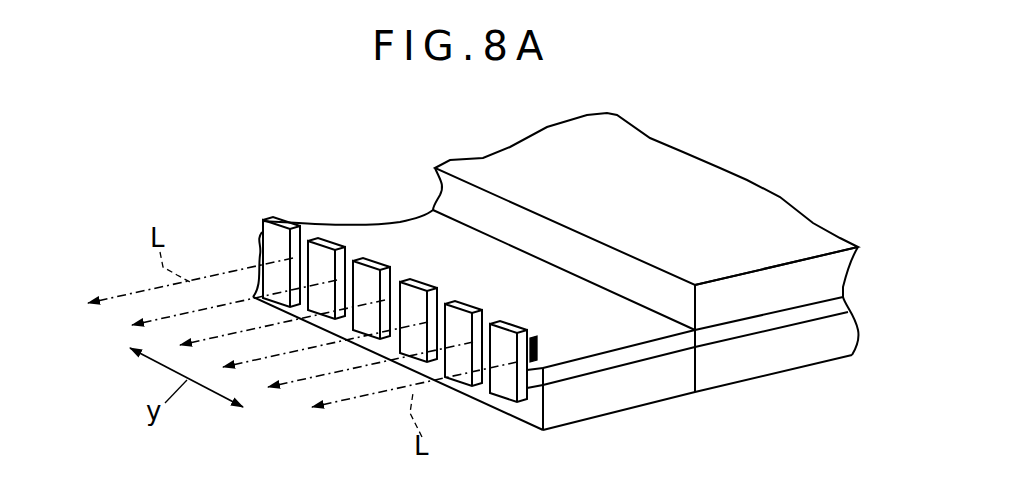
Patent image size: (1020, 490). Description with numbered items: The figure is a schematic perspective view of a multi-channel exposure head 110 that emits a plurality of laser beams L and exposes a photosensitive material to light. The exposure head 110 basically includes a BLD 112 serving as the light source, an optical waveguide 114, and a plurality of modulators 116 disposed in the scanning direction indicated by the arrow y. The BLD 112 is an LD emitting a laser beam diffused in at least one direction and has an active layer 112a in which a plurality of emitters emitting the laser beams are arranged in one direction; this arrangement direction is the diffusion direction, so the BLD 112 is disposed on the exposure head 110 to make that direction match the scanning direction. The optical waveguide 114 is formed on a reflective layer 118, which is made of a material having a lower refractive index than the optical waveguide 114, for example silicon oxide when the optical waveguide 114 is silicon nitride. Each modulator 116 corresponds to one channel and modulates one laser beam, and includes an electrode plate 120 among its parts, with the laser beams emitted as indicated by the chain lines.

The exposure head 110 is at (698, 118).
The BLD 112 is at (773, 210).
The active layer 112a is at (765, 323).
The optical waveguide 114 is at (600, 367).
The modulators 116 is at (347, 238).
The reflective layer 118 is at (660, 393).
The electrode plate 120 is at (538, 354).